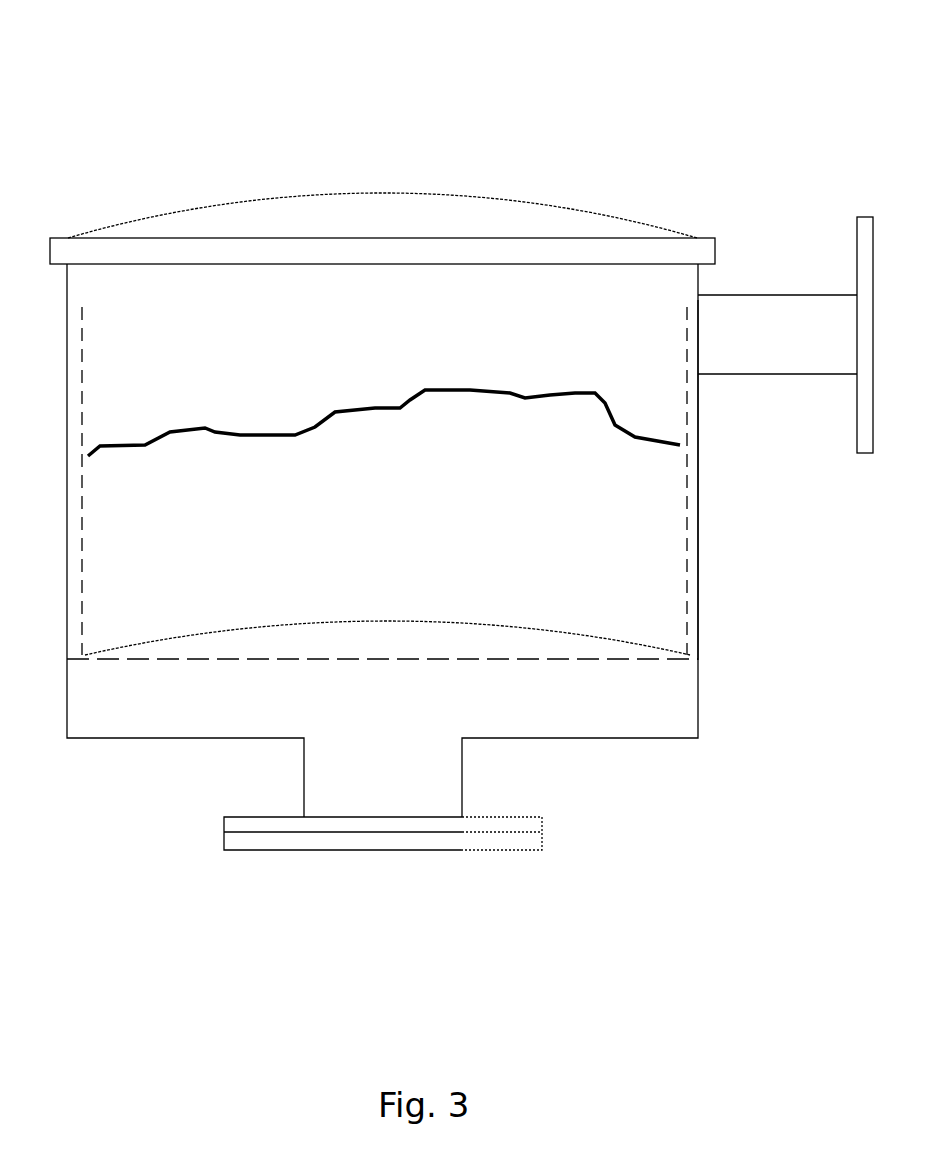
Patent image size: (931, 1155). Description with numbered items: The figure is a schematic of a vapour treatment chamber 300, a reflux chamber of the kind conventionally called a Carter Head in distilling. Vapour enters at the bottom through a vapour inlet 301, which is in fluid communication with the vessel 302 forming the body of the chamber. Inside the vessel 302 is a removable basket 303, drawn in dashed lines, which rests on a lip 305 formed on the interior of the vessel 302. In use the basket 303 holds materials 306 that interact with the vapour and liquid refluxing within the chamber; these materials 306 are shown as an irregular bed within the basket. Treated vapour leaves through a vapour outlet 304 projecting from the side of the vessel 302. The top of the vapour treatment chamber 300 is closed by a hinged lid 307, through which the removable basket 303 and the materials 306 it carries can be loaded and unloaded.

The vapour treatment chamber 300 is at (698, 86).
The vapour inlet 301 is at (383, 852).
The vessel 302 is at (702, 622).
The removable basket 303 is at (92, 394).
The vapour outlet 304 is at (864, 342).
The lip 305 is at (614, 660).
The materials 306 is at (384, 469).
The hinged lid 307 is at (390, 186).